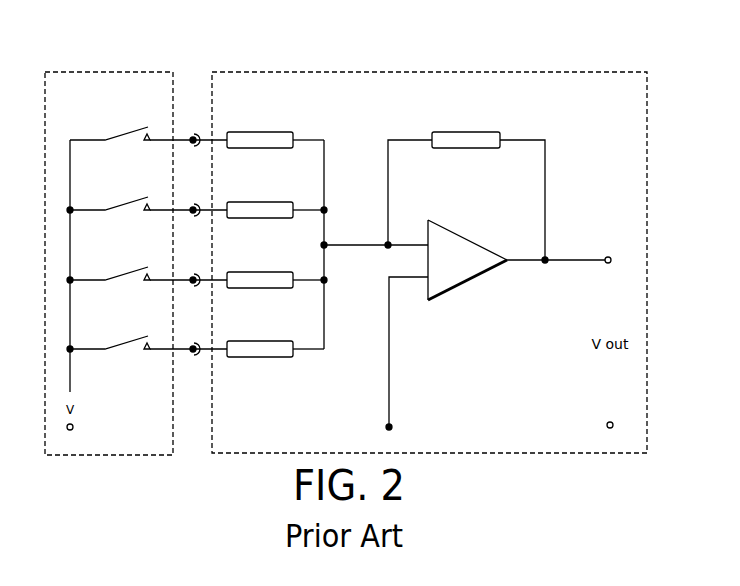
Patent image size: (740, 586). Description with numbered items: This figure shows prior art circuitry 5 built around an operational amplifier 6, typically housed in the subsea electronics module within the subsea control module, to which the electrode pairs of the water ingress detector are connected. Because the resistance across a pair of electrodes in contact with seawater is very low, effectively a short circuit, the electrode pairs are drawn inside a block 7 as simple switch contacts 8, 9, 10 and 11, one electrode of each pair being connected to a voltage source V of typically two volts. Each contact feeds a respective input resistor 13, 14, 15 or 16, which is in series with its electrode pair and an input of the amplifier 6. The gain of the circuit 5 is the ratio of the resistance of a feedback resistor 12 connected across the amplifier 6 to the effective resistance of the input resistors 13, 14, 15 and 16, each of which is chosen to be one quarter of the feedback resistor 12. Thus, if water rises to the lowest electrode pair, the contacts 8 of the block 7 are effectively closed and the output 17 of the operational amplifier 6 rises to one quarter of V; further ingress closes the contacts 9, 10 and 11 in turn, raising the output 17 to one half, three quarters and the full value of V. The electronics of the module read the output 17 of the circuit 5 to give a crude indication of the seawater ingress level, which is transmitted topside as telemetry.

The circuitry 5 is at (623, 72).
The operational amplifier 6 is at (470, 286).
The block 7 is at (147, 72).
The switch contacts 8 is at (119, 344).
The switch contacts 9 is at (119, 275).
The switch contacts 10 is at (119, 205).
The switch contacts 11 is at (119, 135).
The feedback resistor 12 is at (463, 132).
The input resistor 13 is at (269, 132).
The input resistor 14 is at (269, 202).
The input resistor 15 is at (269, 272).
The input resistor 16 is at (269, 341).
The output 17 is at (609, 257).